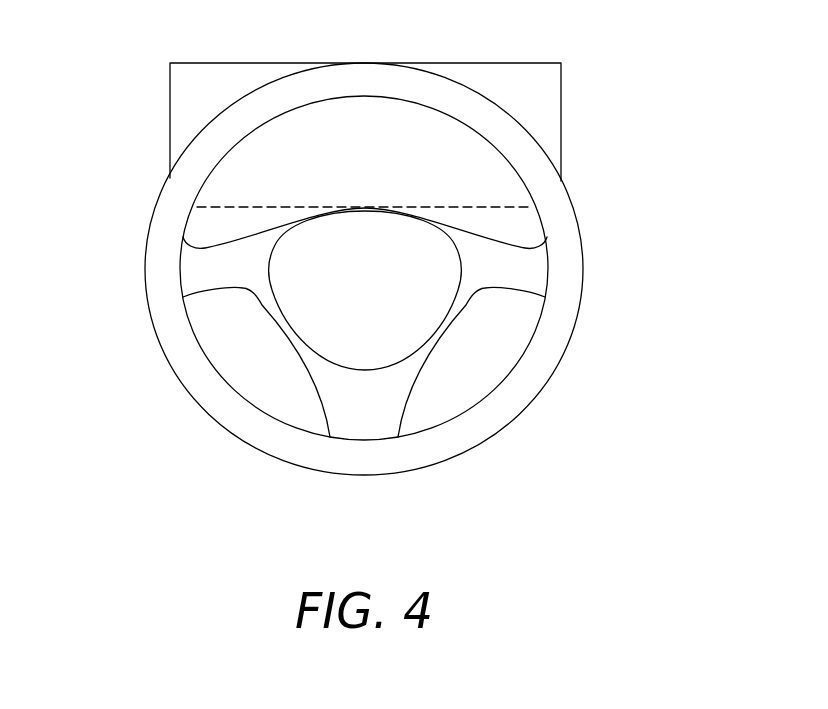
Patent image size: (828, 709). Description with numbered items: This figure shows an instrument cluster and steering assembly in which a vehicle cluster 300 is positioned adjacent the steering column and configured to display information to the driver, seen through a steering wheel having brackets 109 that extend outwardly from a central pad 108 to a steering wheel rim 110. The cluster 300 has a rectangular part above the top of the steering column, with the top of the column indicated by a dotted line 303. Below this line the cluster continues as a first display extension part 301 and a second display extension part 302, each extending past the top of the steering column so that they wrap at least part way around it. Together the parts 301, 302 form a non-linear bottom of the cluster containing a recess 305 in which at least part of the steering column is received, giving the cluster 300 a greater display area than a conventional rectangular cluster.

The central pad 108 is at (410, 310).
The brackets 109 is at (525, 265).
The steering wheel rim 110 is at (192, 383).
The vehicle cluster 300 is at (499, 63).
The first display extension part 301 is at (218, 222).
The second display extension part 302 is at (510, 223).
The dotted line 303 is at (487, 205).
The recess 305 is at (318, 215).